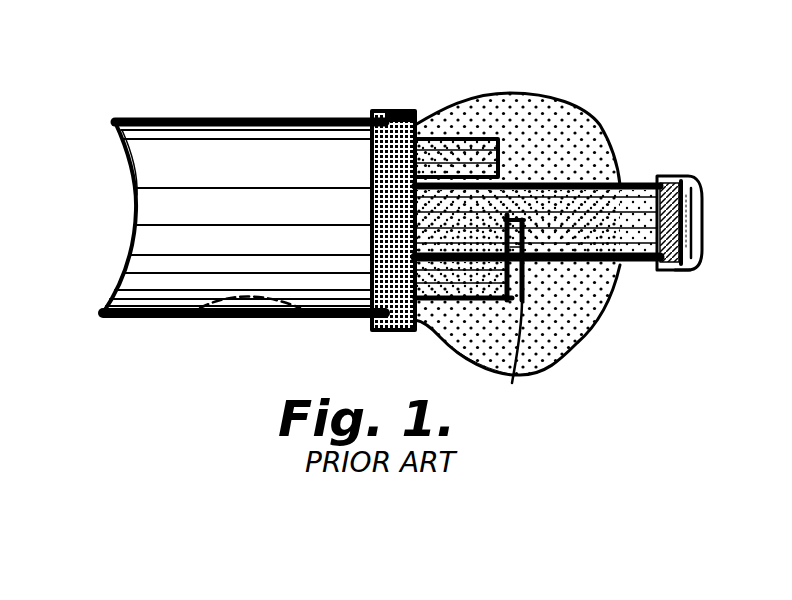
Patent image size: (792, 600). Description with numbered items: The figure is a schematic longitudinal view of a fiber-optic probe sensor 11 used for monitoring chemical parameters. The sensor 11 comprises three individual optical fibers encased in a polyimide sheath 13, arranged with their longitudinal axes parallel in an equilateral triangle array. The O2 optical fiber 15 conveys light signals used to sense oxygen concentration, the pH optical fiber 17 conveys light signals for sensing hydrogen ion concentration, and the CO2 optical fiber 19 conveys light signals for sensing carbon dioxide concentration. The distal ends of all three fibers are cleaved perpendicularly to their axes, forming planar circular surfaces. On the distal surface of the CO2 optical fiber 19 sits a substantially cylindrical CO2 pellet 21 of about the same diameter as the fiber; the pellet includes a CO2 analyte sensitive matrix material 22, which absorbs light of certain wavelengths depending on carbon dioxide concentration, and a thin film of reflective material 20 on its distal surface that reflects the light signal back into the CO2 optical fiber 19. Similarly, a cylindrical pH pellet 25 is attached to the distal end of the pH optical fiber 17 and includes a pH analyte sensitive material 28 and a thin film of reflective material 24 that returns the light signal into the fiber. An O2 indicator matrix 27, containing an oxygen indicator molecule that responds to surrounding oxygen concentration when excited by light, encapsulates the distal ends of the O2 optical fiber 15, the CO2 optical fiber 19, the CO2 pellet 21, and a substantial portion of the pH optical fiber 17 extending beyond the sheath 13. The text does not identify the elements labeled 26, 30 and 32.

The fiber-optic probe sensor 11 is at (172, 365).
The polyimide sheath 13 is at (252, 117).
The O2 optical fiber 15 is at (441, 150).
The pH optical fiber 17 is at (620, 177).
The CO2 optical fiber 19 is at (440, 330).
The thin film of reflective material 20 is at (540, 270).
The CO2 pellet 21 is at (534, 357).
The CO2 analyte sensitive matrix material 22 is at (617, 278).
The thin film of reflective material 24 is at (703, 212).
The pH pellet 25 is at (704, 234).
The cap lower edge 26 is at (693, 266).
The O2 indicator matrix 27 is at (588, 118).
The pH analyte sensitive material 28 is at (681, 181).
The end wall 30 is at (400, 328).
The plunger 32 is at (254, 320).